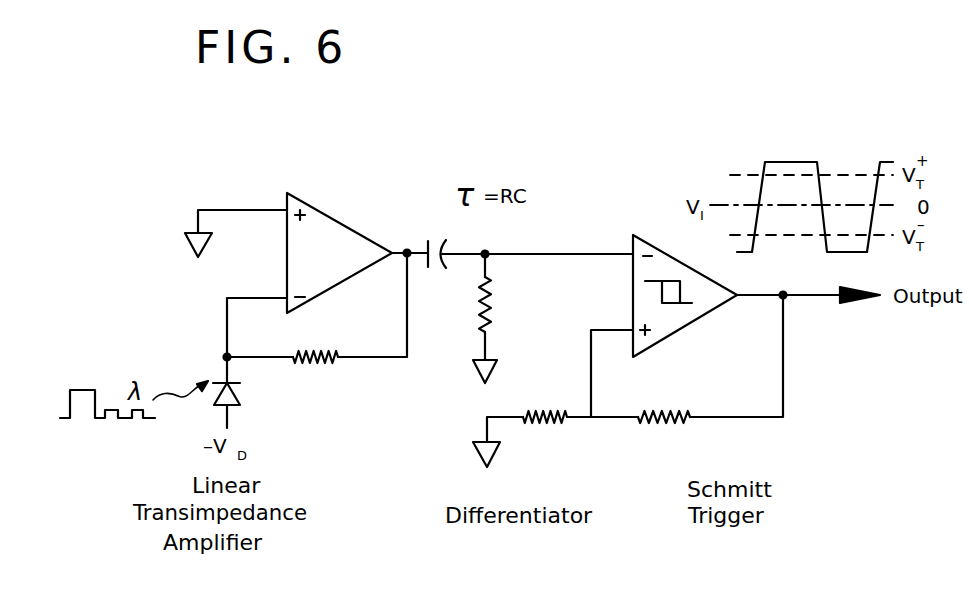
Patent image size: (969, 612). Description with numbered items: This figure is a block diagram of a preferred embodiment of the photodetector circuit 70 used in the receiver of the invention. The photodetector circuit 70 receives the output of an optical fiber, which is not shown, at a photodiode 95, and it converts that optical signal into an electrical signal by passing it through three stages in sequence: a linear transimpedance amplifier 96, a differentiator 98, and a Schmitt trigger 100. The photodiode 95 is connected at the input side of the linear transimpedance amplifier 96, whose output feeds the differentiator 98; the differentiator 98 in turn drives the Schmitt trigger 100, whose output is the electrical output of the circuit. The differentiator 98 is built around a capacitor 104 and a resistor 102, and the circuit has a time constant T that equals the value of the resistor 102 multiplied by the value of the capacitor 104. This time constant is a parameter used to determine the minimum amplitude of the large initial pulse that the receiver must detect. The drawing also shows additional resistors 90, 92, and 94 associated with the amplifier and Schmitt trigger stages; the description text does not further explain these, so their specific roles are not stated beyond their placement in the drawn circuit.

The photodetector circuit 70 is at (526, 273).
The feedback resistor 90 is at (315, 372).
The resistor 92 is at (545, 433).
The feedback resistor 94 is at (664, 433).
The photodiode 95 is at (240, 392).
The linear transimpedance amplifier 96 is at (334, 266).
The differentiator 98 is at (500, 249).
The Schmitt trigger 100 is at (743, 356).
The resistor 102 is at (509, 307).
The capacitor 104 is at (441, 258).